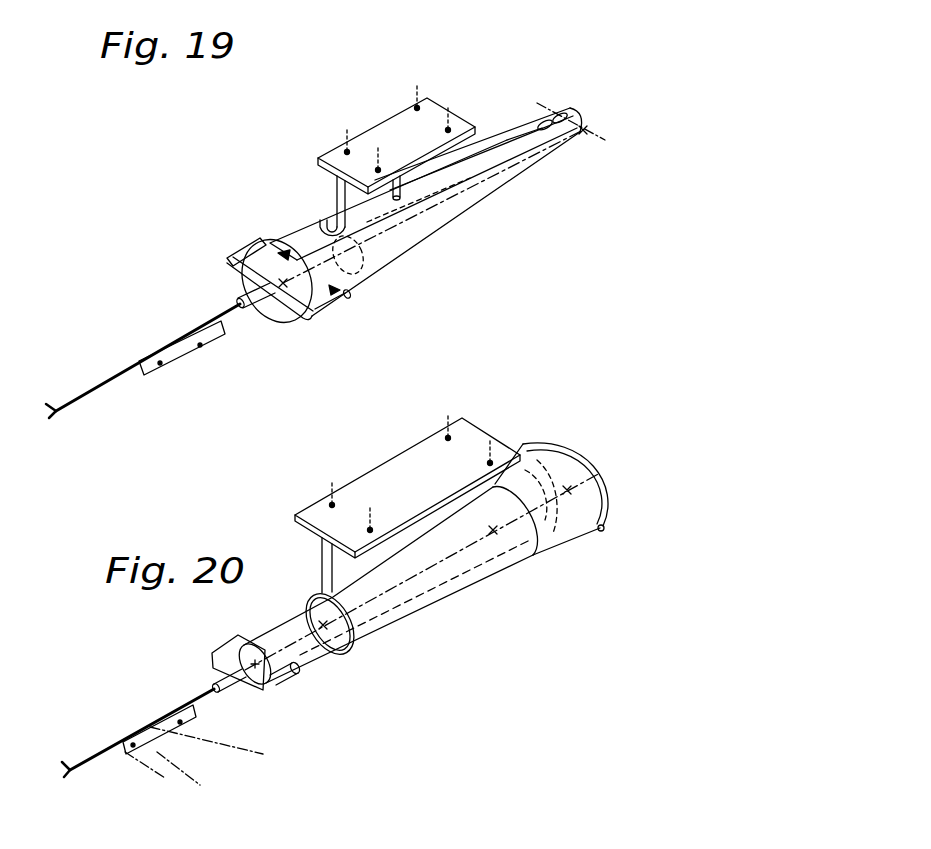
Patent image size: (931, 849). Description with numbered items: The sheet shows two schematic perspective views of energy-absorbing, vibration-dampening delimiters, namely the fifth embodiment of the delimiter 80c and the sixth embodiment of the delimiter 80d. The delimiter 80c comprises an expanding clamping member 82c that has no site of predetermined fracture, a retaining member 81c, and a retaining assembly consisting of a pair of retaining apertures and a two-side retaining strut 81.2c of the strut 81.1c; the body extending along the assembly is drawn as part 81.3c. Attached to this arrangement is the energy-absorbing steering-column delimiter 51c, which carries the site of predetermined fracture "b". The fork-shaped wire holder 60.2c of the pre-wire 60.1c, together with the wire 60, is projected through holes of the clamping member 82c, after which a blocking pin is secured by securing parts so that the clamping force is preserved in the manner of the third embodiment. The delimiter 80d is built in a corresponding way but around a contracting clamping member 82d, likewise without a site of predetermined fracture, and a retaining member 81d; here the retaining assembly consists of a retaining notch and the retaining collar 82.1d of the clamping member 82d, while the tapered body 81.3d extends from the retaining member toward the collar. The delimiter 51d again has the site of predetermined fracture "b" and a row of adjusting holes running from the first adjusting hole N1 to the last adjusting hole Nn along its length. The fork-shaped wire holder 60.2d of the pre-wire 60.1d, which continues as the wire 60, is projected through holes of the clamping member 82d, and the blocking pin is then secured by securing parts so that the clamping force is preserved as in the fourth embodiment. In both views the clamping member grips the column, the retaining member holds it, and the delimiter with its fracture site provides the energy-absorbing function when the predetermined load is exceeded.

In FIG. 19, the energy-absorbing, vibration-dampening delimiter 80c is at (503, 57).
In FIG. 19, the retaining member 81c is at (412, 135).
In FIG. 19, the expanding clamping member 82c is at (513, 138).
In FIG. 19, the strut 81.1c is at (437, 163).
In FIG. 19, the two-side retaining strut 81.2c is at (403, 195).
In FIG. 19, the trough body 81.3c is at (360, 223).
In FIG. 19, the fork-shaped wire holder 60.2c is at (240, 253).
In FIG. 19, the pre-wire 60.1c is at (232, 307).
In FIG. 19, the delimiter 51c is at (193, 335).
In FIG. 19, the rod 60 is at (115, 370).
In FIG. 20, the rod 60 is at (95, 750).
In FIG. 19, the site of predetermined fracture b is at (205, 373).
In FIG. 20, the site of predetermined fracture b is at (197, 750).
In FIG. 20, the energy-absorbing, vibration-dampening delimiter 80d is at (602, 390).
In FIG. 20, the retaining member 81d is at (458, 450).
In FIG. 20, the contracting clamping member 82d is at (540, 466).
In FIG. 20, the retaining collar 82.1d is at (606, 497).
In FIG. 20, the tapered tube body 81.3d is at (447, 591).
In FIG. 20, the fork-shaped wire holder 60.2d is at (267, 677).
In FIG. 20, the pre-wire 60.1d is at (203, 695).
In FIG. 20, the delimiter 51d is at (147, 727).
In FIG. 20, the adjusting hole N1 is at (226, 758).
In FIG. 20, the adjusting hole Nn is at (163, 785).